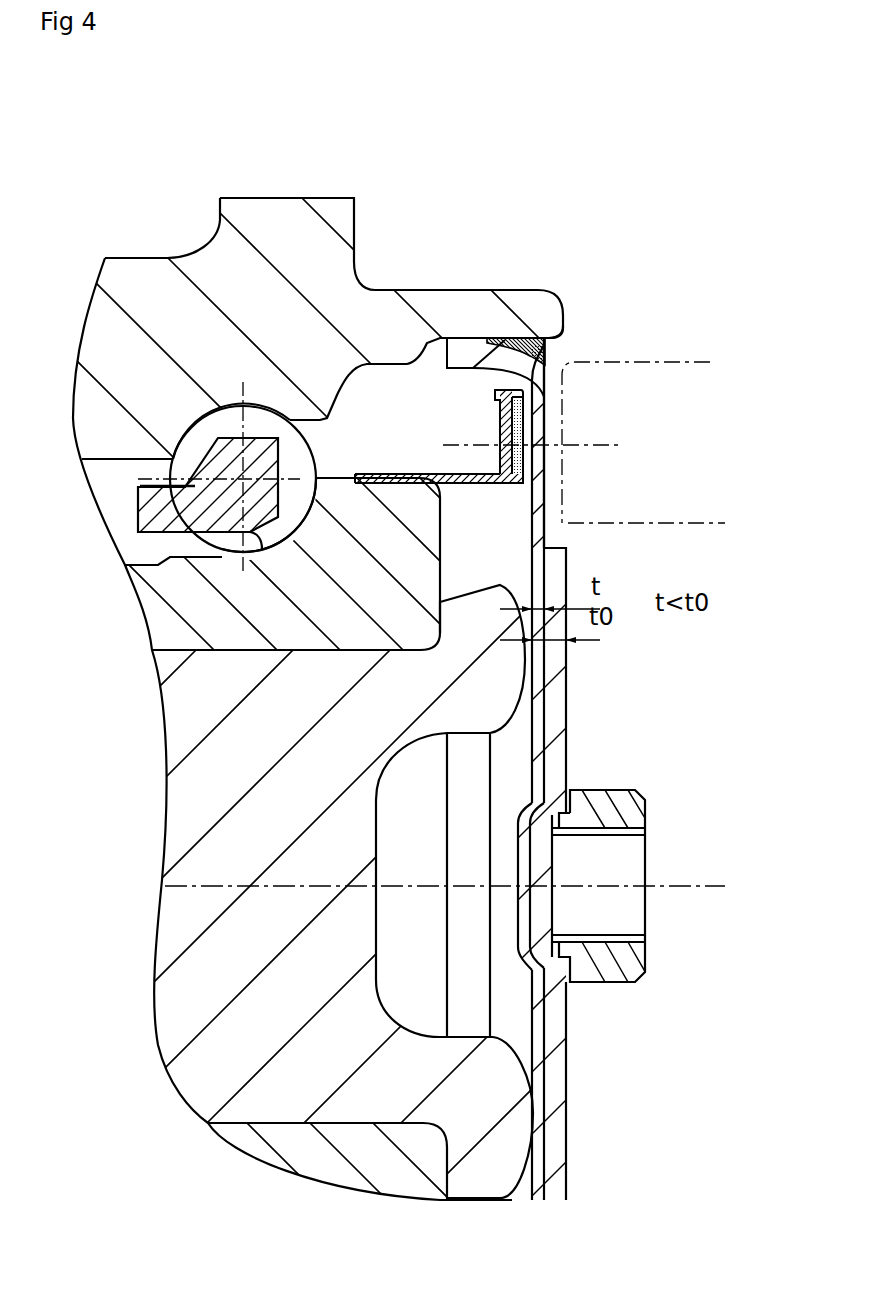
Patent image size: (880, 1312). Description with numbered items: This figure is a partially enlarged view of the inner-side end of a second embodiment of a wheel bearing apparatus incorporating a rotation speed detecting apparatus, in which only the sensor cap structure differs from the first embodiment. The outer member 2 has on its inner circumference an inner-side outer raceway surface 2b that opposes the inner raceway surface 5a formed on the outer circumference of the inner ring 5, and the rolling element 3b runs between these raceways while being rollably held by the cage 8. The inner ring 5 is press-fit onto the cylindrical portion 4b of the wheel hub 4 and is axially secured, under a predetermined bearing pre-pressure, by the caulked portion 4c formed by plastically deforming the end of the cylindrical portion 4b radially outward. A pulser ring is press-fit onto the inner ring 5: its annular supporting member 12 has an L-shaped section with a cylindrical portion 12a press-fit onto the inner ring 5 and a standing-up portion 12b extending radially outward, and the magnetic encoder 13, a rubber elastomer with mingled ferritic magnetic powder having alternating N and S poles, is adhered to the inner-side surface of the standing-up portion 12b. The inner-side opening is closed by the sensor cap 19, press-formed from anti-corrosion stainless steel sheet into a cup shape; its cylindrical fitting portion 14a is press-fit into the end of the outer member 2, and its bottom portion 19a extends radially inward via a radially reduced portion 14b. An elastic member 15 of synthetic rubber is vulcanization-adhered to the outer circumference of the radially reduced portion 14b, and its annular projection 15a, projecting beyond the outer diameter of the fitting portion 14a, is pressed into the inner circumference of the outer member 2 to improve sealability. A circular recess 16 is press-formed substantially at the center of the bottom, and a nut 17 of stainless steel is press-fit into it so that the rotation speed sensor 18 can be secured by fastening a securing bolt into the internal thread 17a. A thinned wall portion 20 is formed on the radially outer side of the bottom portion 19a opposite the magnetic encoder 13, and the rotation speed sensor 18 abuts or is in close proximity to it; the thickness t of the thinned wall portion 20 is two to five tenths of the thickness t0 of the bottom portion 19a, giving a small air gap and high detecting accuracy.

The outer member 2 is at (110, 326).
The inner-side outer raceway surface 2b is at (253, 410).
The rolling element 3b is at (170, 482).
The wheel hub 4 is at (185, 811).
The cylindrical portion 4b is at (217, 643).
The caulked portion 4c is at (508, 1137).
The inner ring 5 is at (152, 600).
The inner raceway surface 5a is at (233, 533).
The cage 8 is at (137, 528).
The annular supporting member 12 is at (382, 414).
The cylindrical portion 12a is at (452, 474).
The standing-up portion 12b is at (500, 426).
The magnetic encoder 13 is at (517, 410).
The cylindrical fitting portion 14a is at (455, 348).
The radially reduced portion 14b is at (504, 356).
The elastic member 15 is at (546, 348).
The annular projection 15a is at (537, 337).
The circular recess 16 is at (540, 857).
The nut 17 is at (638, 806).
The internal thread 17a is at (618, 935).
The rotation speed sensor 18 is at (697, 375).
The sensor cap 19 is at (572, 732).
The bottom portion 19a is at (560, 686).
The thinned wall portion 20 is at (534, 528).